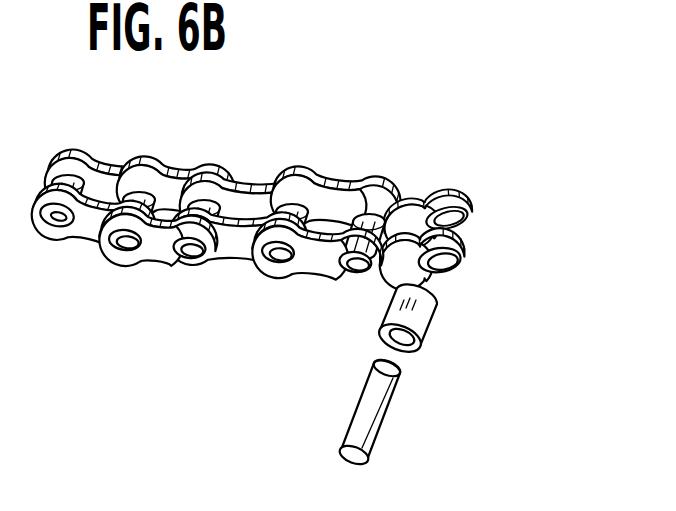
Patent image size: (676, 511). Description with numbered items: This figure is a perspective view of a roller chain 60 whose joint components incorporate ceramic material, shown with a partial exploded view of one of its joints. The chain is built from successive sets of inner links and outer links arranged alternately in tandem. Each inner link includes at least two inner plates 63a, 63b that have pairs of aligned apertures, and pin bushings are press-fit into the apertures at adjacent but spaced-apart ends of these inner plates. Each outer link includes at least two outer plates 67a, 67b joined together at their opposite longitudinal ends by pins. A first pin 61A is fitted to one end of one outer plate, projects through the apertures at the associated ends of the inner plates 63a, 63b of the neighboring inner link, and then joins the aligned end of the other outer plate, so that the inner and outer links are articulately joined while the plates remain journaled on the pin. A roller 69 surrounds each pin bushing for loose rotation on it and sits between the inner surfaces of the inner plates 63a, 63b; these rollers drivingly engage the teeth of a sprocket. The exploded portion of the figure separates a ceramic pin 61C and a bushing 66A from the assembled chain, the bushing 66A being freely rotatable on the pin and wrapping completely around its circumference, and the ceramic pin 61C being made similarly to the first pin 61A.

The roller chain 60 is at (297, 223).
The first pin 61A is at (320, 258).
The ceramic pin 61C is at (384, 404).
The inner plate 63a is at (393, 272).
The inner plate 63b is at (462, 213).
The bushing 66A is at (430, 322).
The outer plate 67a is at (333, 188).
The outer plate 67b is at (340, 268).
The roller 69 is at (141, 192).